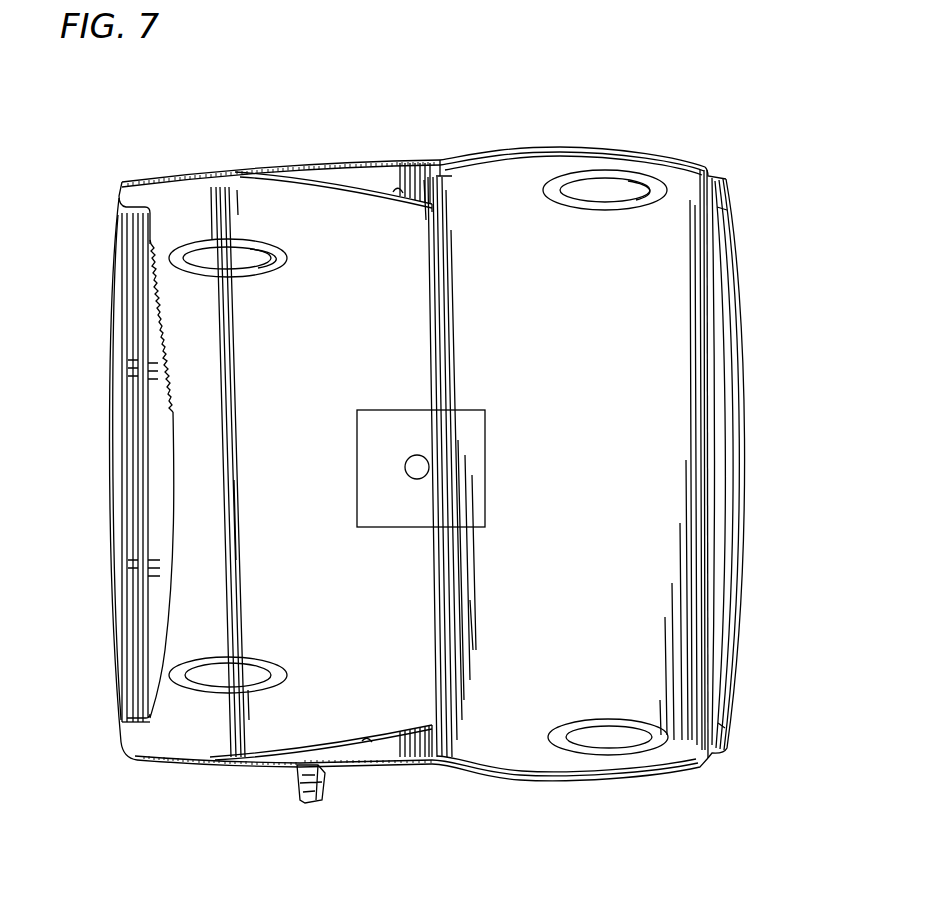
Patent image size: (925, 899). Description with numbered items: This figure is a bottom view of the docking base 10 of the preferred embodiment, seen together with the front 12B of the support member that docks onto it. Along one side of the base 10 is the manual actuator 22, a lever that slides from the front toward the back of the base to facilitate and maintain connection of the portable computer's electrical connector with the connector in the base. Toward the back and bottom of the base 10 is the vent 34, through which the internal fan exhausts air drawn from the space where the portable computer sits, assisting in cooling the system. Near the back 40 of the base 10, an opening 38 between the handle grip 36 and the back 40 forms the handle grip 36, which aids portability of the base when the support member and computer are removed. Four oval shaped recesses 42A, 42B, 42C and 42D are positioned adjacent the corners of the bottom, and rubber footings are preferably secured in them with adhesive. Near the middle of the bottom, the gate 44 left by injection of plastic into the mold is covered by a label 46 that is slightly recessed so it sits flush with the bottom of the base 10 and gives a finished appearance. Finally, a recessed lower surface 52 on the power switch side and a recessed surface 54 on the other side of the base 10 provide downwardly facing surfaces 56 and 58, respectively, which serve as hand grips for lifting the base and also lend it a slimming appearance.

The base 10 is at (425, 468).
The front 12B is at (748, 412).
The manual actuator 22 is at (322, 782).
The vent 34 is at (155, 335).
The handle grip 36 is at (110, 432).
The opening 38 is at (138, 463).
The back 40 is at (170, 465).
The oval shaped recess 42A is at (247, 256).
The oval shaped recess 42B is at (620, 190).
The oval shaped recess 42C is at (212, 672).
The oval shaped recess 42D is at (586, 738).
The gate 44 is at (415, 478).
The label 46 is at (485, 438).
The recessed lower surface 52 is at (367, 740).
The recessed surface 54 is at (398, 193).
The downwardly facing surface 56 is at (402, 747).
The downwardly facing surface 58 is at (373, 183).